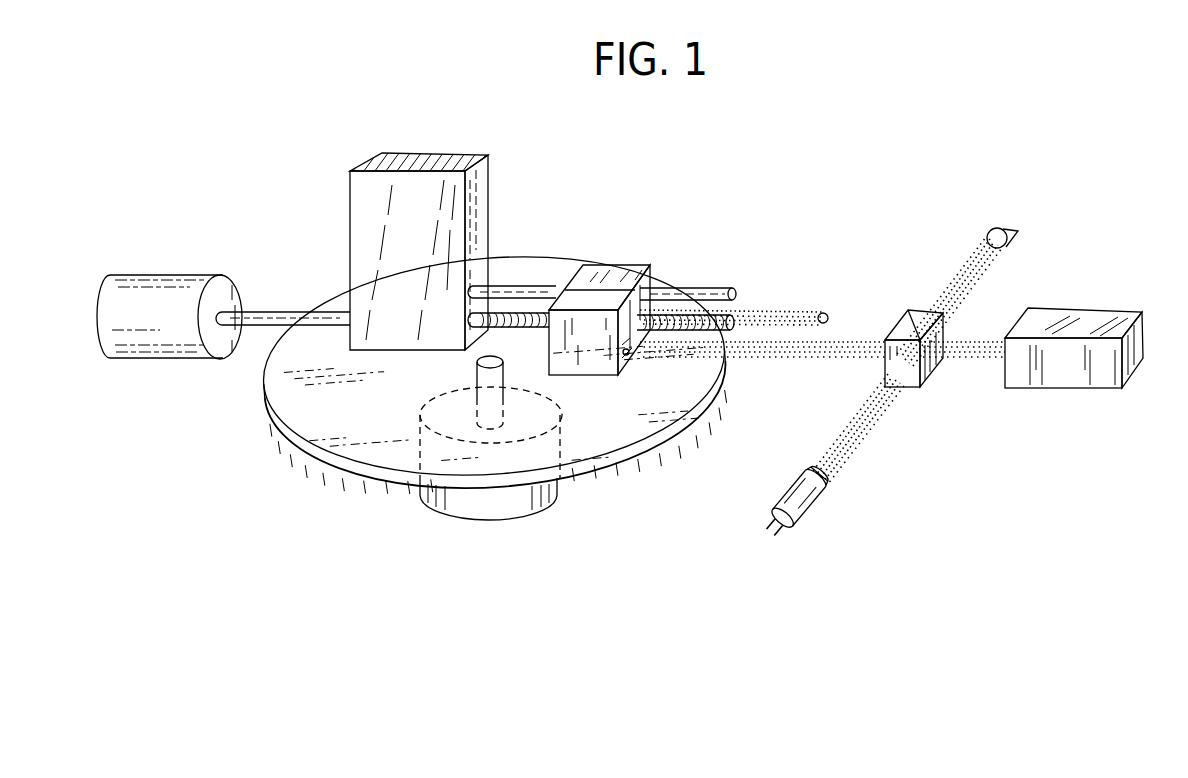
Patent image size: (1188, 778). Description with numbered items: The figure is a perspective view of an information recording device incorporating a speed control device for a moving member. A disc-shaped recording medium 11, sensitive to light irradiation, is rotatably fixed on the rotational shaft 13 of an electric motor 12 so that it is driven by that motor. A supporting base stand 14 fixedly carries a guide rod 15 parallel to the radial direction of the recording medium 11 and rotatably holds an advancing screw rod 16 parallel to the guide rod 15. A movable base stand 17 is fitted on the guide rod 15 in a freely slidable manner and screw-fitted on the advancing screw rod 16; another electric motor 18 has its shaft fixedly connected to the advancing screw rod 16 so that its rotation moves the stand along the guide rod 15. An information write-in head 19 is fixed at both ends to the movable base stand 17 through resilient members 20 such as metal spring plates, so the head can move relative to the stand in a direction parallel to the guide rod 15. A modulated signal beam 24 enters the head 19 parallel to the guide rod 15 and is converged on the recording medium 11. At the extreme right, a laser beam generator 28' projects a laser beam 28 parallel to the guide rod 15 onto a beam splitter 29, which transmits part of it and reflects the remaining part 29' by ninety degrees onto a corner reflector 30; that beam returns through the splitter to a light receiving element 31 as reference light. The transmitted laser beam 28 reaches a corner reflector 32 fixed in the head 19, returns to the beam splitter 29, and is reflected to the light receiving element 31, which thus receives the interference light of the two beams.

The disc-shaped recording medium 11 is at (705, 398).
The electric motor 12 is at (478, 497).
The rotational shaft 13 is at (465, 392).
The supporting base stand 14 is at (487, 182).
The guide rod 15 is at (510, 288).
The advancing screw rod 16 is at (273, 315).
The movable base stand 17 is at (610, 280).
The electric motor 18 is at (172, 293).
The information write-in head 19 is at (580, 362).
The resilient members 20 is at (640, 296).
The signal beam 24 is at (793, 312).
The laser beam 28 is at (822, 375).
The laser beam generator 28' is at (1074, 376).
The beam splitter 29 is at (914, 371).
The remaining part of laser beam 29' is at (907, 360).
The corner reflector 30 is at (1003, 228).
The light receiving element 31 is at (800, 487).
The corner reflector 32 is at (626, 356).